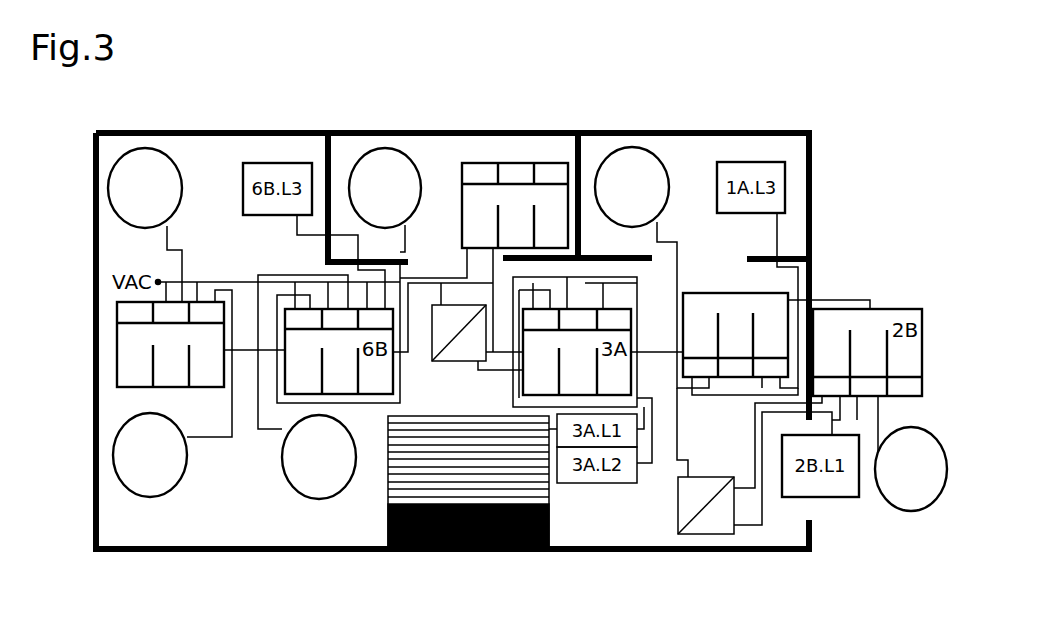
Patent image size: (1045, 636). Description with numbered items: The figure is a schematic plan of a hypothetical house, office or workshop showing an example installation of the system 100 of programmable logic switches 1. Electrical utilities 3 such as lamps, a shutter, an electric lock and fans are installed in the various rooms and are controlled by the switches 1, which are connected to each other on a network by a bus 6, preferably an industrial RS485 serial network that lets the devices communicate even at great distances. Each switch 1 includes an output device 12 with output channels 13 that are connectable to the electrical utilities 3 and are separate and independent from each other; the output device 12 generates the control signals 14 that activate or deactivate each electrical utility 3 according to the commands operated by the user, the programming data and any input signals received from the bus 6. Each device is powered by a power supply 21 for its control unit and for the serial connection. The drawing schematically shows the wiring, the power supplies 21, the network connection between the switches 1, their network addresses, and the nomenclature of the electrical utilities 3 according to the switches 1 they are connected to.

The system 100 is at (417, 100).
The switch 1 is at (455, 208).
The electrical utility 3 is at (153, 167).
The bus 6 is at (250, 355).
The output device 12 is at (115, 315).
The output channel 13 is at (130, 312).
The control signal 14 is at (780, 233).
The power supply 21 is at (463, 352).